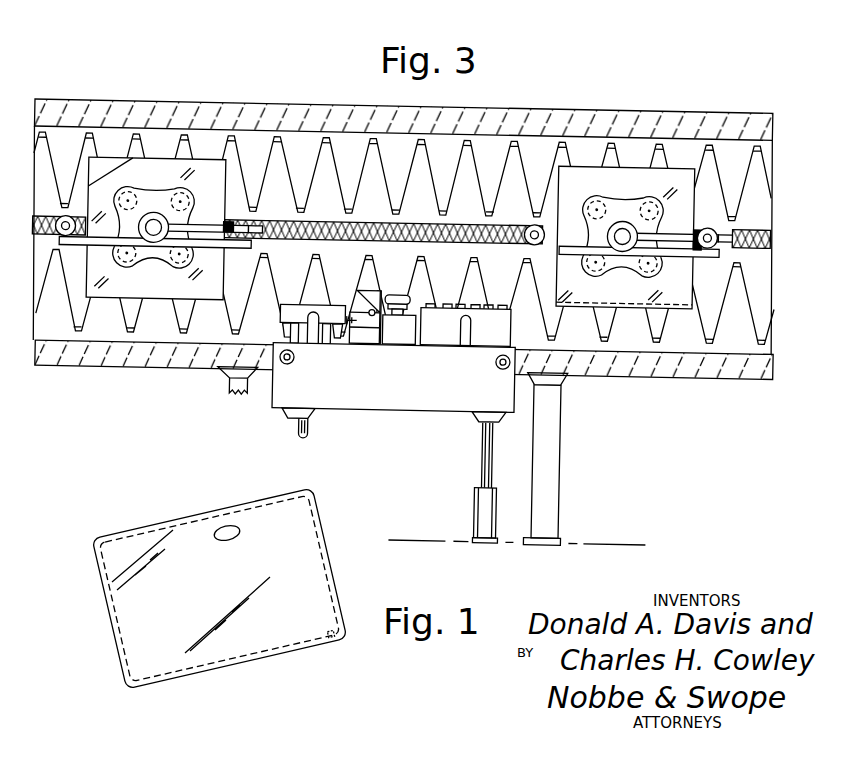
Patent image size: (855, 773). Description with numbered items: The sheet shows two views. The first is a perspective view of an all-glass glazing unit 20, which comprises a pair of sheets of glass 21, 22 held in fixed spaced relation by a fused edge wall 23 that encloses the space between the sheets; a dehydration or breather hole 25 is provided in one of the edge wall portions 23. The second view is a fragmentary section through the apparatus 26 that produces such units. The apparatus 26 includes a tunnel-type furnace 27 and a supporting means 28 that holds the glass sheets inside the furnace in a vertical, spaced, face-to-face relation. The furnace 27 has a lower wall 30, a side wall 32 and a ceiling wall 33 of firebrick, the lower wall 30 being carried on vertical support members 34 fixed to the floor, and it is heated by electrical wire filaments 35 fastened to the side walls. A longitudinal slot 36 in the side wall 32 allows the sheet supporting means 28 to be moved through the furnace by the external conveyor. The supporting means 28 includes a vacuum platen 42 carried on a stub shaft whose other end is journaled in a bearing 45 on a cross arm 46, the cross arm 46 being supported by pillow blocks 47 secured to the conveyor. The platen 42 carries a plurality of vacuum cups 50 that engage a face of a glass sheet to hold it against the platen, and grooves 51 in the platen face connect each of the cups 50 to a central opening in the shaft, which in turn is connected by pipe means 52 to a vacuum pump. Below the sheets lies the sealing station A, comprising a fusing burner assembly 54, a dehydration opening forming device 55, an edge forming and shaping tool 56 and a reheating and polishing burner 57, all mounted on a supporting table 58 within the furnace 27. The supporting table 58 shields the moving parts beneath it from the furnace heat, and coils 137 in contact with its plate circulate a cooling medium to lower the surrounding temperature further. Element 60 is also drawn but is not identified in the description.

In FIG. 1, the all-glass glazing unit 20 is at (211, 585).
In FIG. 3, the sheet of glass 21 is at (103, 170).
In FIG. 1, the sheet of glass 21 is at (225, 526).
In FIG. 3, the sheet of glass 22 is at (115, 288).
In FIG. 1, the sheet of glass 22 is at (300, 568).
In FIG. 1, the fused edge wall 23 is at (182, 513).
In FIG. 1, the dehydration hole 25 is at (332, 645).
In FIG. 3, the apparatus 26 is at (404, 228).
In FIG. 3, the tunnel-type furnace 27 is at (403, 98).
In FIG. 3, the sheet supporting means 28 is at (385, 237).
In FIG. 3, the lower wall 30 is at (678, 385).
In FIG. 3, the side wall 32 is at (400, 143).
In FIG. 3, the ceiling wall 33 is at (495, 113).
In FIG. 3, the vertical support members 34 is at (230, 382).
In FIG. 3, the wire filaments 35 is at (747, 177).
In FIG. 3, the slot 36 is at (378, 223).
In FIG. 3, the vacuum platen 42 is at (163, 257).
In FIG. 3, the bearing 45 is at (167, 223).
In FIG. 3, the cross arm 46 is at (237, 247).
In FIG. 3, the pillow blocks 47 is at (62, 218).
In FIG. 3, the vacuum cups 50 is at (187, 197).
In FIG. 3, the grooves 51 is at (163, 195).
In FIG. 3, the pipe means 52 is at (263, 237).
In FIG. 3, the fusing burner assembly 54 is at (290, 302).
In FIG. 3, the dehydration opening forming device 55 is at (355, 295).
In FIG. 3, the edge forming and shaping tool 56 is at (395, 290).
In FIG. 3, the reheating and polishing burner 57 is at (492, 302).
In FIG. 3, the supporting table 58 is at (418, 392).
In FIG. 3, the machine element 60 is at (408, 308).
In FIG. 3, the coils 137 is at (287, 364).
In FIG. 3, the sealing station A is at (393, 397).